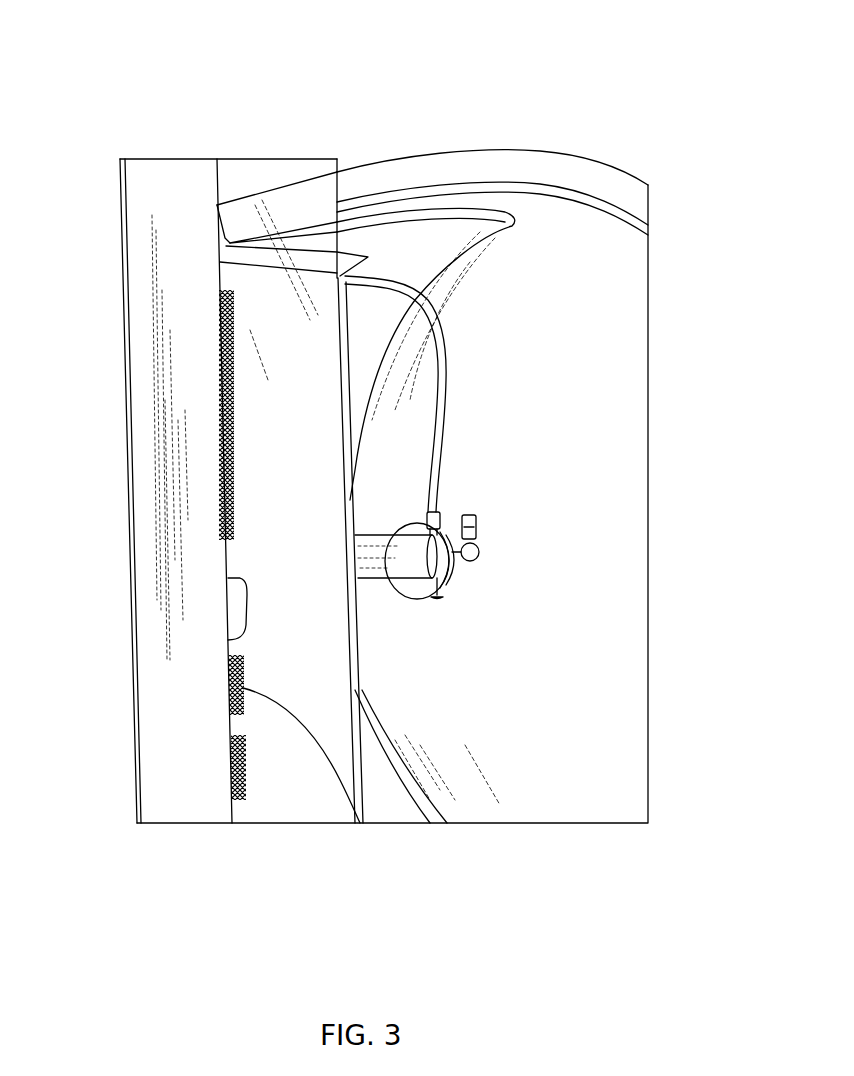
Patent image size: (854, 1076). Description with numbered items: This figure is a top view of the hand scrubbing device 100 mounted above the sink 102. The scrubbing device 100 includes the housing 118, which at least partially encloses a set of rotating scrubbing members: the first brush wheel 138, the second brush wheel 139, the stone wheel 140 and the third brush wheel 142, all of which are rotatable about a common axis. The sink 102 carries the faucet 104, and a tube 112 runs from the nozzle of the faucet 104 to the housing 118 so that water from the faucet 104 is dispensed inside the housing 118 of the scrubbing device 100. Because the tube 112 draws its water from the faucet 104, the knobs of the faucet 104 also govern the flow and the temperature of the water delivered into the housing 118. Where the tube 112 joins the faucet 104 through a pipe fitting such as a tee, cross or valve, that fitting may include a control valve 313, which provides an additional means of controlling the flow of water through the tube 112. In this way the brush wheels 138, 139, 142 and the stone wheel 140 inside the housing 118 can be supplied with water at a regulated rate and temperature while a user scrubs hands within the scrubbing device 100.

The scrubbing device 100 is at (178, 145).
The sink 102 is at (462, 243).
The faucet 104 is at (435, 565).
The tube 112 is at (440, 362).
The housing 118 is at (147, 713).
The first brush wheel 138 is at (232, 795).
The second brush wheel 139 is at (360, 823).
The stone wheel 140 is at (235, 610).
The third brush wheel 142 is at (225, 490).
The control valve 313 is at (478, 548).